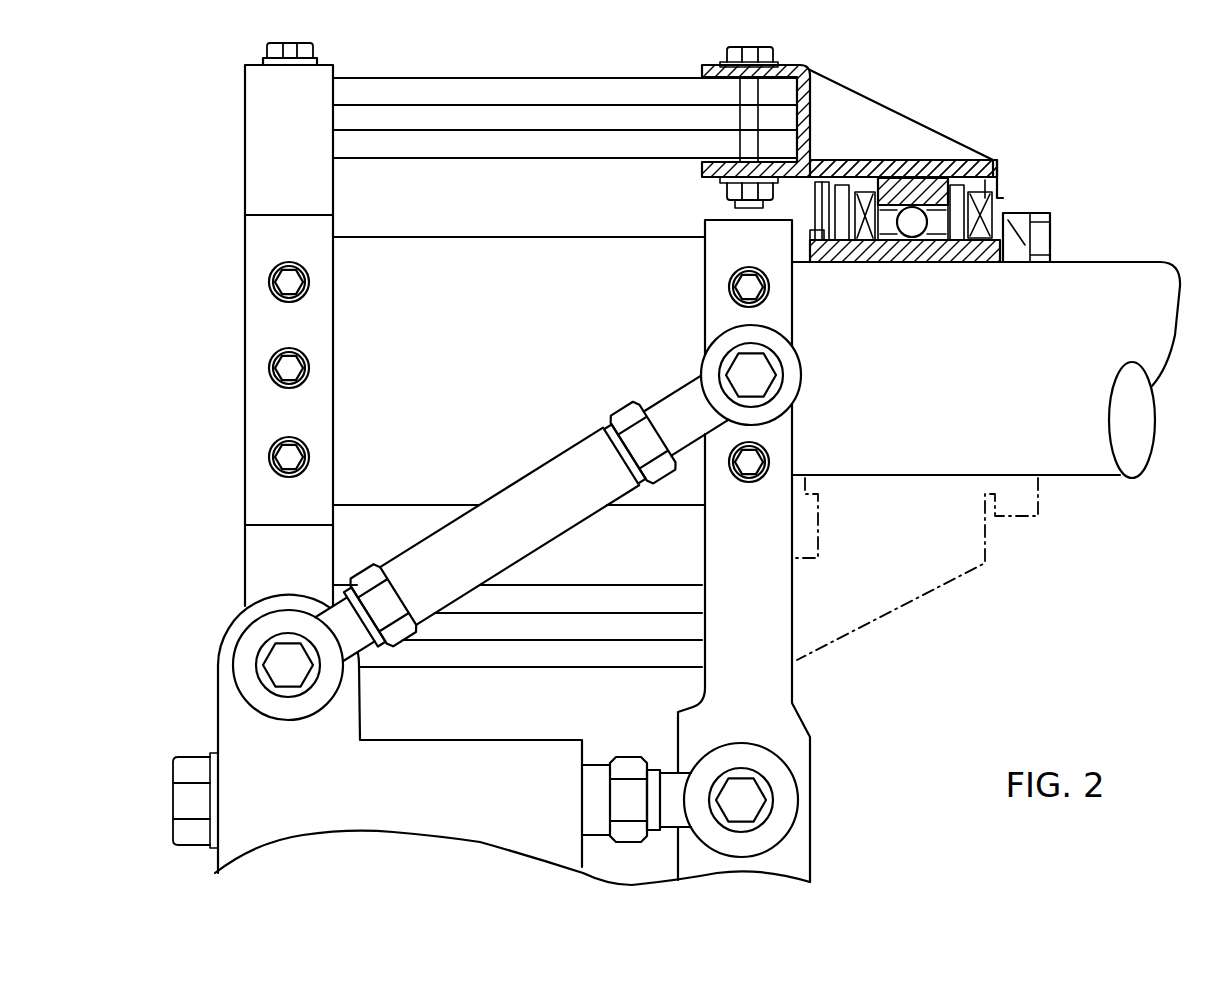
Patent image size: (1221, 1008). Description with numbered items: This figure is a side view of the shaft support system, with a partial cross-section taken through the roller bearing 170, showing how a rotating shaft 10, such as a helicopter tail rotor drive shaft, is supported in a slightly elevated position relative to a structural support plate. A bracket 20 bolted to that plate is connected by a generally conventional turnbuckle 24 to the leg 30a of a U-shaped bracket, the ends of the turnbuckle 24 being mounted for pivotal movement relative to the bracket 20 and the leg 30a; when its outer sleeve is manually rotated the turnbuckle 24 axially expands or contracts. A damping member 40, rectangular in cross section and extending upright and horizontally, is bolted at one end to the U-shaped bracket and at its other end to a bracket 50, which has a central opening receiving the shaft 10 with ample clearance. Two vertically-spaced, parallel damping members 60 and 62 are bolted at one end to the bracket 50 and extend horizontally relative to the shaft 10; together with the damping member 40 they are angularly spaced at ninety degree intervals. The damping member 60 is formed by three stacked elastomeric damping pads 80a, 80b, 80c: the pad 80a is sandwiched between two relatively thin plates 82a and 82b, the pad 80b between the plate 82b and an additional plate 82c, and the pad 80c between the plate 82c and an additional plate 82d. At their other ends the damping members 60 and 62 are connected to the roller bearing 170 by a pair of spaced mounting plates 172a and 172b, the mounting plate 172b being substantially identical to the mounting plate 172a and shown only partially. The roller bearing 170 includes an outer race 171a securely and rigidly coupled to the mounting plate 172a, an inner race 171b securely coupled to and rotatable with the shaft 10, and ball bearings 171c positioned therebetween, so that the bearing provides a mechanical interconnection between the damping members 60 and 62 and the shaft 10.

The shaft 10 is at (1168, 262).
The bracket 20 is at (230, 737).
The turnbuckle 24 is at (543, 488).
The leg 30a is at (787, 723).
The damping member 40 is at (436, 339).
The bracket 50 is at (262, 168).
The damping member 60 is at (565, 120).
The damping member 62 is at (538, 657).
The elastomeric damping pad 80a is at (413, 92).
The elastomeric damping pad 80b is at (495, 122).
The elastomeric damping pad 80c is at (453, 147).
The plate 82a is at (348, 78).
The plate 82b is at (470, 105).
The plate 82c is at (532, 127).
The plate 82d is at (401, 157).
The roller bearing 170 is at (1003, 207).
The outer race 171a is at (960, 158).
The inner race 171b is at (921, 250).
The ball bearings 171c is at (912, 217).
The mounting plate 172a is at (877, 113).
The mounting plate 172b is at (928, 568).